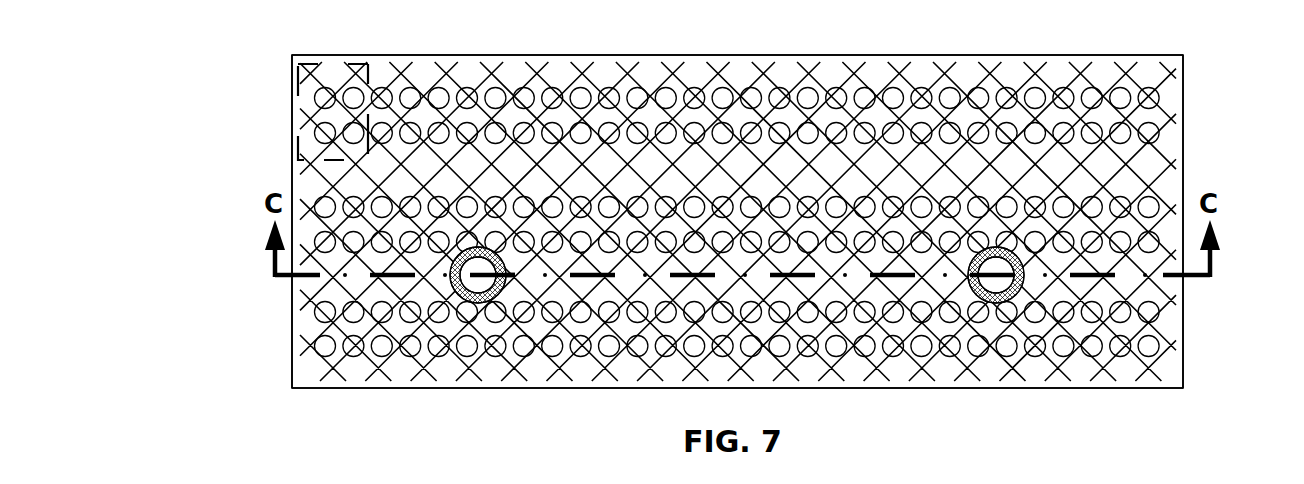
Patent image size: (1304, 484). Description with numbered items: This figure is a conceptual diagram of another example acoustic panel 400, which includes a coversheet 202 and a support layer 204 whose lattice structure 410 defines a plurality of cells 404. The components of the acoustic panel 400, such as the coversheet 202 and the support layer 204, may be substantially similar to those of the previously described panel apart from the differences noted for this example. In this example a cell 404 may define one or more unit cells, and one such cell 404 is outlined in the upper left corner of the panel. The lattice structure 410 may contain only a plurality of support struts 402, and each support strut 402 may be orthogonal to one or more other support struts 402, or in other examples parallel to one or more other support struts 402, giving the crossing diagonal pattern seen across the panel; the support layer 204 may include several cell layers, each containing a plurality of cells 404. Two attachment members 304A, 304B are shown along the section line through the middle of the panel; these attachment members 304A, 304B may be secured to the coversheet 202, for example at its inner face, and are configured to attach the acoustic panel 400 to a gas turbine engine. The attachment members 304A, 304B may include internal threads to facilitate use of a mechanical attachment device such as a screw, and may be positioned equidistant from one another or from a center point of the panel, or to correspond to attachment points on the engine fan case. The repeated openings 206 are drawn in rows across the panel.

The acoustic panel 400 is at (167, 80).
The coversheet 202 is at (1185, 57).
The support layer 204 is at (1163, 367).
The apertures 206 is at (1160, 139).
The support strut 402 is at (303, 348).
The cell 404 is at (298, 110).
The lattice structure 410 is at (1177, 320).
The attachment member 304A is at (472, 302).
The attachment member 304B is at (998, 302).